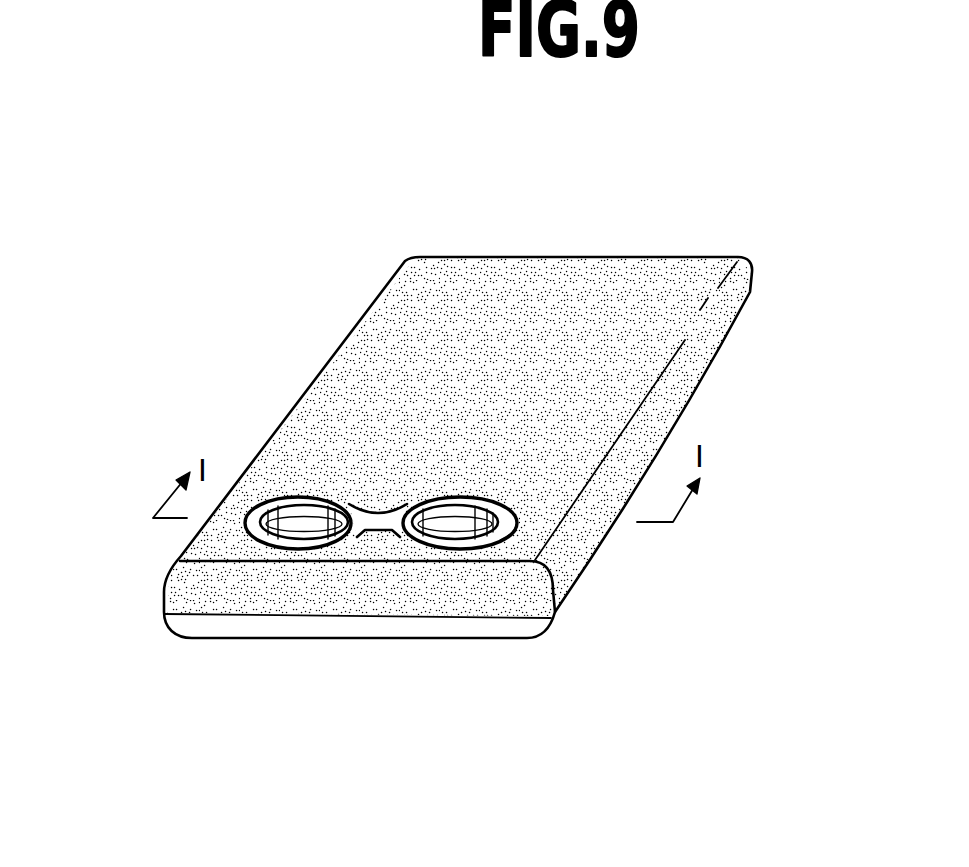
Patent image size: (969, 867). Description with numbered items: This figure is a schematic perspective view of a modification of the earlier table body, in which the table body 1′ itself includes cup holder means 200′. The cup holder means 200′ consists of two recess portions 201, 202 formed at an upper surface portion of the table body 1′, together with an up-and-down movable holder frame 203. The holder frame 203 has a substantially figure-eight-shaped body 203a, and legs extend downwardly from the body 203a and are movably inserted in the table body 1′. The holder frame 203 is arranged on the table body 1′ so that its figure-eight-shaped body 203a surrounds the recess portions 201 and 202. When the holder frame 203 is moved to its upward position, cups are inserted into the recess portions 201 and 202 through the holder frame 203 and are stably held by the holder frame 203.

The table body 1′ is at (548, 275).
The cup holder means 200′ is at (341, 557).
The recess portion 201 is at (303, 527).
The recess portion 202 is at (455, 533).
The holder frame 203 is at (258, 532).
The figure-8-shaped body 203a is at (513, 538).